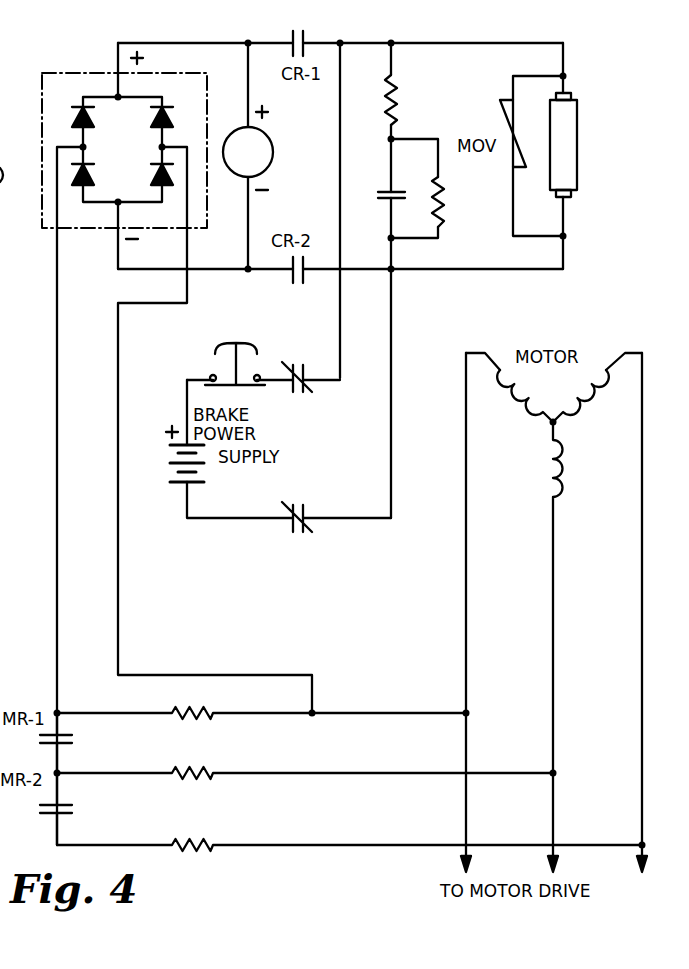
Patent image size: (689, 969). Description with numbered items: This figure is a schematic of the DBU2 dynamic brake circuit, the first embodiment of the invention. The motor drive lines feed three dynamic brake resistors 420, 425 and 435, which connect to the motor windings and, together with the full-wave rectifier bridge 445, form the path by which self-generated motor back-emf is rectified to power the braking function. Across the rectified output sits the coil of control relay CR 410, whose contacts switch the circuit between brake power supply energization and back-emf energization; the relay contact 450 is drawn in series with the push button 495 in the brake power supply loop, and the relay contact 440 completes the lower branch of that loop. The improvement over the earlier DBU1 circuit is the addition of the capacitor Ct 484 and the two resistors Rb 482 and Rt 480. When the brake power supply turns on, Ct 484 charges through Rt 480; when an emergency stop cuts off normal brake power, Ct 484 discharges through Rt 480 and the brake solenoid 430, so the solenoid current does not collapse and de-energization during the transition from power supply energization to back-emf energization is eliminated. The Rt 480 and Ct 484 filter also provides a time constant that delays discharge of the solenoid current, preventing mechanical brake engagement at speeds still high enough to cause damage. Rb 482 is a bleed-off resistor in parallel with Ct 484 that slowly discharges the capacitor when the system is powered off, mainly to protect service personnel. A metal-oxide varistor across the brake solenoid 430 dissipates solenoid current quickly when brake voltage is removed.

The rectifier bridge 445 is at (84, 146).
The control relay CR 410 is at (273, 160).
The resistor Rt 480 is at (395, 80).
The capacitor Ct 484 is at (382, 200).
The resistor Rb 482 is at (441, 220).
The brake solenoid 430 is at (581, 118).
The push button PB1 495 is at (212, 374).
The relay contact CR-4 450 is at (296, 392).
The relay contact CR-3 440 is at (296, 530).
The dynamic brake resistor R1 420 is at (213, 718).
The dynamic brake resistor R2 425 is at (213, 778).
The dynamic brake resistor R3 435 is at (213, 850).